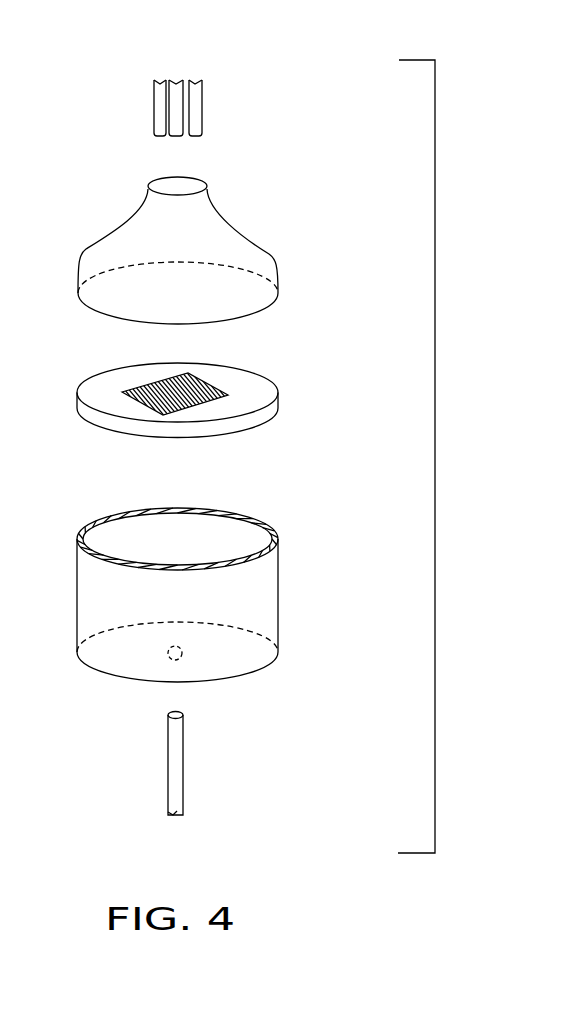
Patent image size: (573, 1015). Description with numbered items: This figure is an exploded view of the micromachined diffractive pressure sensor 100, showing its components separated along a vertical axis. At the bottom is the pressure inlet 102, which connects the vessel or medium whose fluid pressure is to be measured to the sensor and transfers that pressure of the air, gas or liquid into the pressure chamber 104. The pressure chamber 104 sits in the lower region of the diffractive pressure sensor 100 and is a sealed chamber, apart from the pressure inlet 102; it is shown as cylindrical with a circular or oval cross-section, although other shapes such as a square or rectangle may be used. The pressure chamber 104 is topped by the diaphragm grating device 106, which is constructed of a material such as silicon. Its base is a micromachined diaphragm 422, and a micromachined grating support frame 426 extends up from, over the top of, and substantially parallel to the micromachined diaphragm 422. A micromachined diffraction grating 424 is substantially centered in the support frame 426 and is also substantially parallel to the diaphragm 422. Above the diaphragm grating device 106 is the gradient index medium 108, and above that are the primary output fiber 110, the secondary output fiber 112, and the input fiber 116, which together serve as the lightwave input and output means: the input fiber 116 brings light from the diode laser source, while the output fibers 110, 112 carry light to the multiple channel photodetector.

The diffractive pressure sensor 100 is at (458, 420).
The pressure inlet 102 is at (177, 757).
The pressure chamber 104 is at (270, 615).
The diaphragm grating device 106 is at (196, 407).
The gradient index medium 108 is at (242, 238).
The primary output fiber 110 is at (176, 69).
The secondary output fiber 112 is at (198, 108).
The input fiber 116 is at (157, 108).
The micromachined diaphragm 422 is at (252, 419).
The micromachined diffraction grating 424 is at (137, 388).
The micromachined grating support frame 426 is at (132, 410).